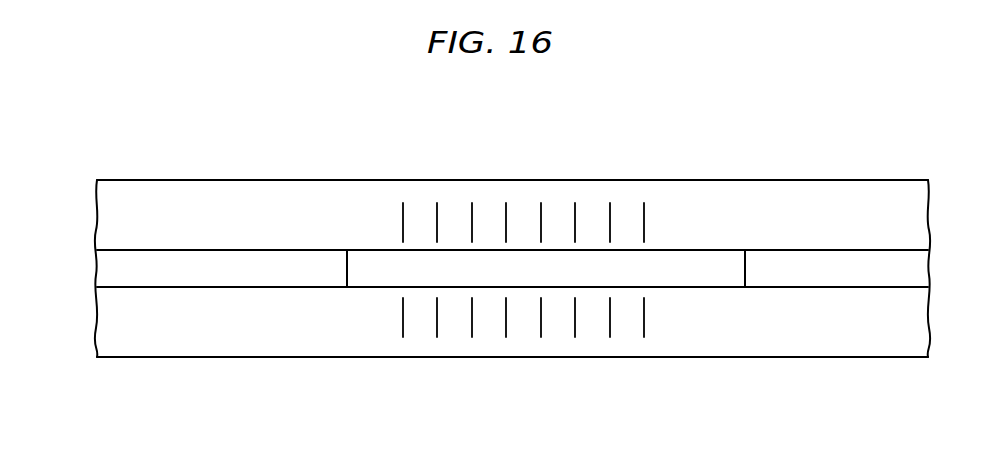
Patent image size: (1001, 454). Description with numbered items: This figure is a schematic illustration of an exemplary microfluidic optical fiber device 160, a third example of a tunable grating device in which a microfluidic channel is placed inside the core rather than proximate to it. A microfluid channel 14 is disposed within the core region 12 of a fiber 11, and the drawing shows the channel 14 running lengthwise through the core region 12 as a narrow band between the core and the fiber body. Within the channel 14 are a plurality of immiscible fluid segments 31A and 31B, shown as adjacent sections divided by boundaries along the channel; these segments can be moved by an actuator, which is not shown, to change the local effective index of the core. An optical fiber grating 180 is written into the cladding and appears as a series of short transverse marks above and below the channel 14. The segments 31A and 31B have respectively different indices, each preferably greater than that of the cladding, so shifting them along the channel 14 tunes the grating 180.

The microfluidic optical fiber device 160 is at (486, 122).
The core region 12 is at (130, 250).
The microfluid channel 14 is at (96, 272).
The fluid segment 31A is at (707, 268).
The fluid segment 31B is at (263, 250).
The fiber 11 is at (214, 358).
The optical fiber grating 180 is at (645, 375).